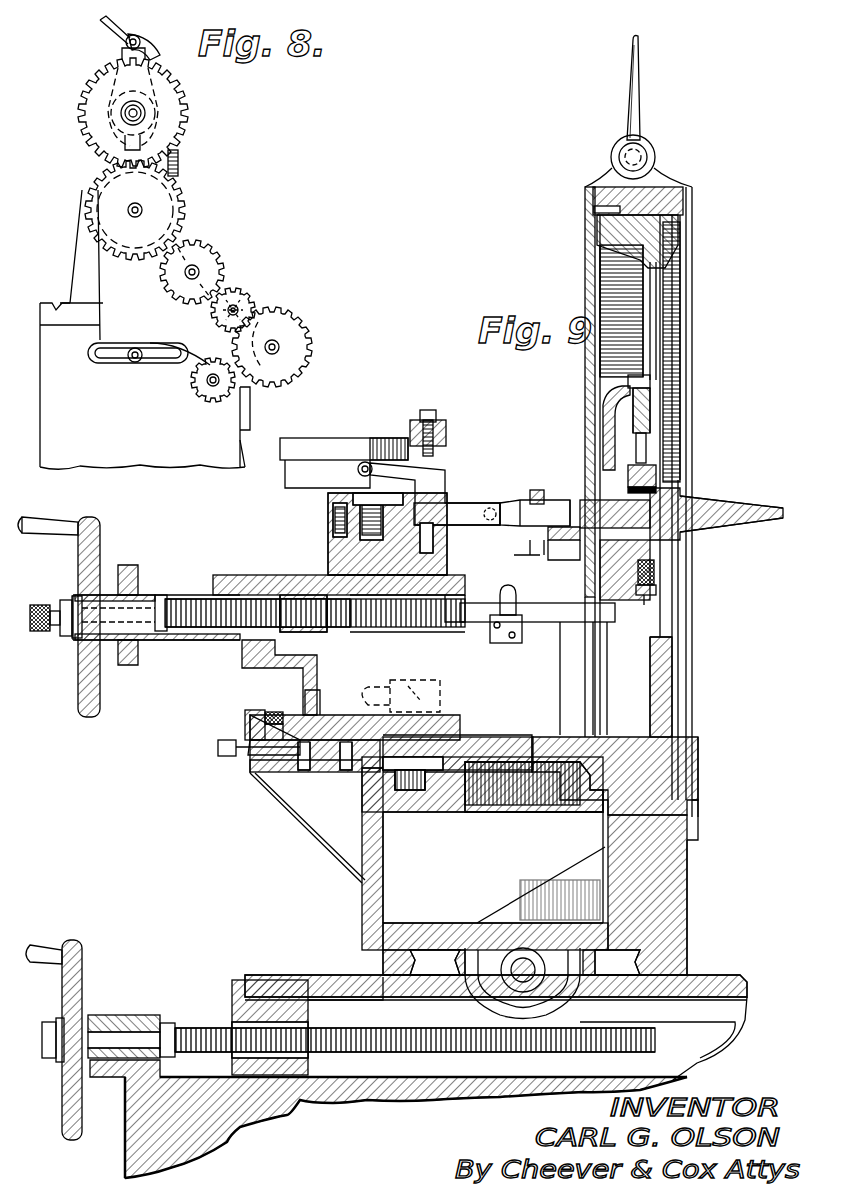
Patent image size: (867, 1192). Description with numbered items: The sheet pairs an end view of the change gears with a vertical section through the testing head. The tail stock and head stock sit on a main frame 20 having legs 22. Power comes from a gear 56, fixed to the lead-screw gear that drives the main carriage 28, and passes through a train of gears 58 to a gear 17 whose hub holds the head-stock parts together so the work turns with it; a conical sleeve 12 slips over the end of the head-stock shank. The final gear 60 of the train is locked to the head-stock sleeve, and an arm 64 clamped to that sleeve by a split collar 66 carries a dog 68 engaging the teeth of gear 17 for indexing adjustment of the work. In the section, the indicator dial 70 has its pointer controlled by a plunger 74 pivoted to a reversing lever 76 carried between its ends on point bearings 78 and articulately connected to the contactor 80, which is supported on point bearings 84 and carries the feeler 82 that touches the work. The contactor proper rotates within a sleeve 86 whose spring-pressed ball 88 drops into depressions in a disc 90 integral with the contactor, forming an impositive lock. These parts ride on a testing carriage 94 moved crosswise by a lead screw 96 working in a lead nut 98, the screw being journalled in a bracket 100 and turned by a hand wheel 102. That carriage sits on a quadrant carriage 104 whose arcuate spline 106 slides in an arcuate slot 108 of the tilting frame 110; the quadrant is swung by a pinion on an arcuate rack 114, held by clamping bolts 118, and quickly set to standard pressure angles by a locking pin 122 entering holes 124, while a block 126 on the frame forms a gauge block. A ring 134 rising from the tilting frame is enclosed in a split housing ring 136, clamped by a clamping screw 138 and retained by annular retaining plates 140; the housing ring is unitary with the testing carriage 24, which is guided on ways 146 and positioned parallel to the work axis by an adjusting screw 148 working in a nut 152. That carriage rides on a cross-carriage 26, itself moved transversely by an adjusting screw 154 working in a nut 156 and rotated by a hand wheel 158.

In FIG. 8, the conical sleeve 12 is at (125, 113).
In FIG. 8, the gear 17 is at (180, 100).
In FIG. 8, the main frame 20 is at (148, 455).
In FIG. 8, the legs 22 is at (193, 462).
In FIG. 9, the testing carriage 24 is at (690, 890).
In FIG. 9, the cross-carriage 26 is at (733, 976).
In FIG. 9, the main carriage 28 is at (130, 1150).
In FIG. 8, the gear 56 is at (198, 395).
In FIG. 8, the train of gears 58 is at (268, 330).
In FIG. 8, the final gear 60 is at (188, 122).
In FIG. 8, the arm 64 is at (122, 49).
In FIG. 8, the split collar 66 is at (180, 150).
In FIG. 8, the dog 68 is at (150, 44).
In FIG. 9, the dial 70 is at (320, 438).
In FIG. 9, the plunger 74 is at (358, 469).
In FIG. 9, the arm or lever 76 is at (470, 505).
In FIG. 9, the point bearings 78 is at (428, 412).
In FIG. 9, the contactor 80 is at (522, 500).
In FIG. 9, the contact point or feeler 82 is at (780, 512).
In FIG. 9, the point bearings 84 is at (650, 382).
In FIG. 9, the sleeve 86 is at (562, 500).
In FIG. 9, the spring pressed ball 88 is at (660, 472).
In FIG. 9, the disc 90 is at (660, 490).
In FIG. 9, the testing carriage 94 is at (290, 575).
In FIG. 9, the lead screw 96 is at (196, 599).
In FIG. 9, the lead nut 98 is at (310, 632).
In FIG. 9, the bracket 100 is at (205, 641).
In FIG. 9, the hand wheel 102 is at (100, 548).
In FIG. 9, the quadrant carriage 104 is at (512, 740).
In FIG. 9, the arcuate spline 106 is at (355, 775).
In FIG. 9, the arcuate slot 108 is at (345, 765).
In FIG. 9, the tilting frame 110 is at (650, 772).
In FIG. 9, the arcuate rack 114 is at (416, 790).
In FIG. 9, the clamping bolts 118 is at (412, 680).
In FIG. 9, the locking pin 122 is at (220, 756).
In FIG. 9, the holes 124 is at (275, 762).
In FIG. 9, the block 126 is at (265, 790).
In FIG. 9, the ring 134 is at (694, 235).
In FIG. 9, the housing ring 136 is at (676, 185).
In FIG. 9, the clamping screw 138 is at (642, 152).
In FIG. 9, the annular gibs or retaining plates 140 is at (584, 197).
In FIG. 9, the ways 146 is at (400, 950).
In FIG. 9, the adjusting screw 148 is at (530, 950).
In FIG. 9, the nut 152 is at (490, 985).
In FIG. 9, the adjusting screw 154 is at (208, 1025).
In FIG. 9, the nut 156 is at (310, 1063).
In FIG. 9, the hand wheel 158 is at (84, 962).